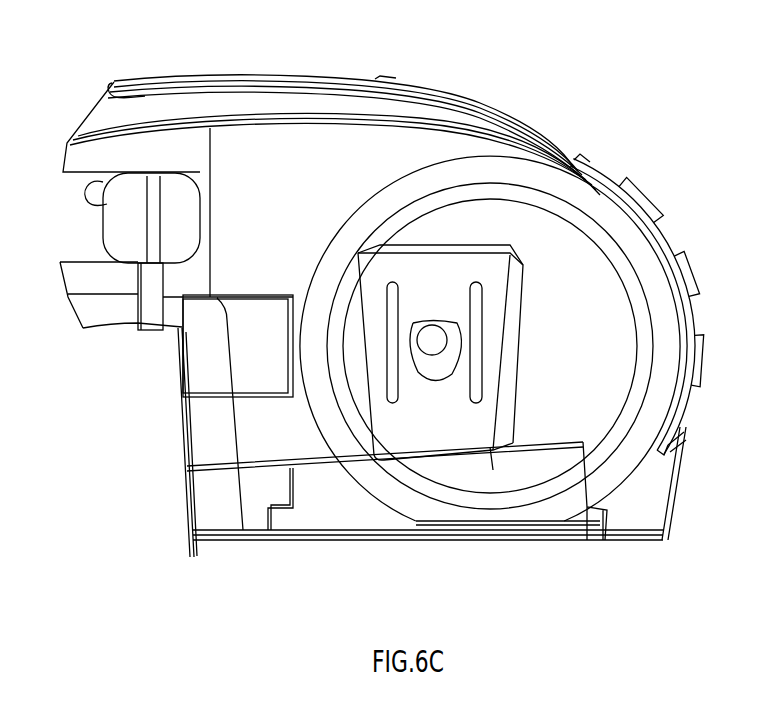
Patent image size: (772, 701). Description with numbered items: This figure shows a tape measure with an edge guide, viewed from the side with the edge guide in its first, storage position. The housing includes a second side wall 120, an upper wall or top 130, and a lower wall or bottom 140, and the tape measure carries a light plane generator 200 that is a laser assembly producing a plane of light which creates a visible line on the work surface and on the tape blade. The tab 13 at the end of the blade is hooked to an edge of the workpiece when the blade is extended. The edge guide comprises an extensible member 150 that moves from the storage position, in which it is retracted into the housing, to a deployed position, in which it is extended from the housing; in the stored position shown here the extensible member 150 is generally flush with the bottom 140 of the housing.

The light plane generator 200 is at (78, 220).
The upper wall or top 130 is at (192, 78).
The second side wall 120 is at (624, 294).
The tab 13 is at (193, 546).
The extensible member 150 is at (338, 504).
The lower wall or bottom 140 is at (625, 540).